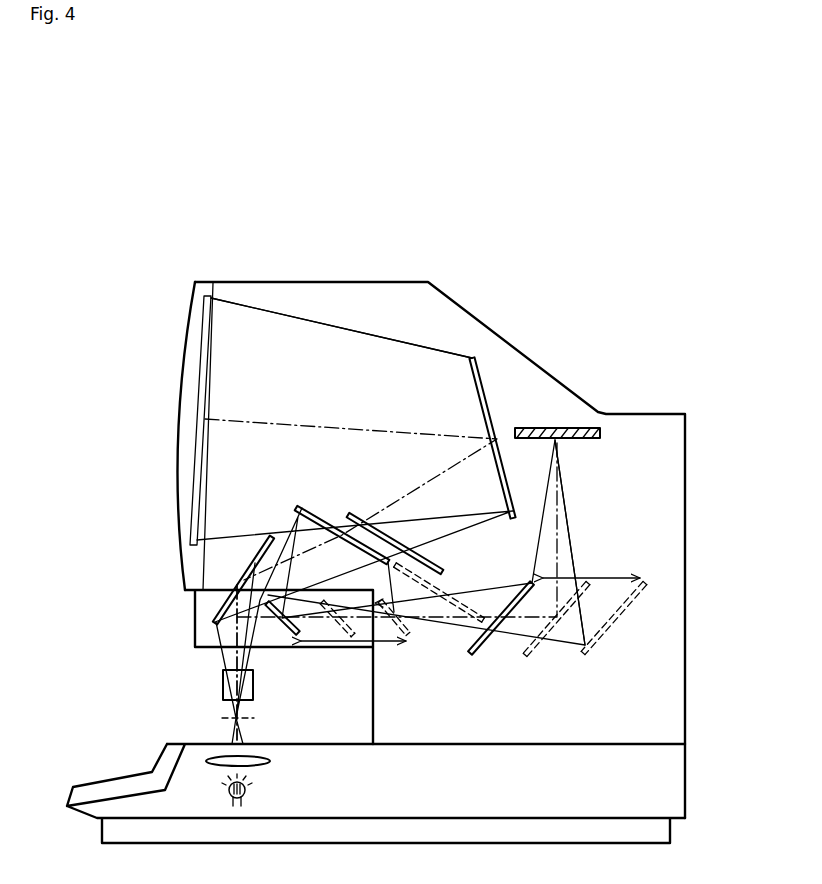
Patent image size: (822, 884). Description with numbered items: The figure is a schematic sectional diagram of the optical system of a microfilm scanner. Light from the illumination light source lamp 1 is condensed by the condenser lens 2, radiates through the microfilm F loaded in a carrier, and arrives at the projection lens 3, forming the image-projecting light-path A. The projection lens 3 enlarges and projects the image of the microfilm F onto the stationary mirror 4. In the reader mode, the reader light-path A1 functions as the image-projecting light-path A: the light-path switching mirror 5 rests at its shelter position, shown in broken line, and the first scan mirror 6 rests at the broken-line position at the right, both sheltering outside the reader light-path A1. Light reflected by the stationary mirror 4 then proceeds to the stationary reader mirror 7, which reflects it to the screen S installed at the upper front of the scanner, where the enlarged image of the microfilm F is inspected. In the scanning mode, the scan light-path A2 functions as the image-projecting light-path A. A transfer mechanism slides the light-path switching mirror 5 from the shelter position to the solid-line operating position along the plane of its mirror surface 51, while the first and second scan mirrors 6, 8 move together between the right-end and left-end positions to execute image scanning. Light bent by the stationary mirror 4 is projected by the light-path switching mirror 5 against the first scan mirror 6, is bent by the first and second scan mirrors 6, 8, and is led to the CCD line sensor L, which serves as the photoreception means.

The screen S is at (200, 318).
The reader light-path A1 is at (327, 327).
The stationary reader mirror 7 is at (480, 370).
The CCD line sensor L is at (565, 428).
The scan light-path A2 is at (570, 507).
The mirror surface 51 is at (335, 548).
The light-path switching mirror 5 is at (313, 516).
The stationary mirror 4 is at (213, 607).
The first scan mirror 6 is at (293, 634).
The second scan mirror 8 is at (477, 653).
The image-projecting light-path A is at (225, 661).
The microfilm F is at (215, 716).
The projection lens 3 is at (255, 686).
The condenser lens 2 is at (272, 762).
The illumination light source lamp 1 is at (246, 792).